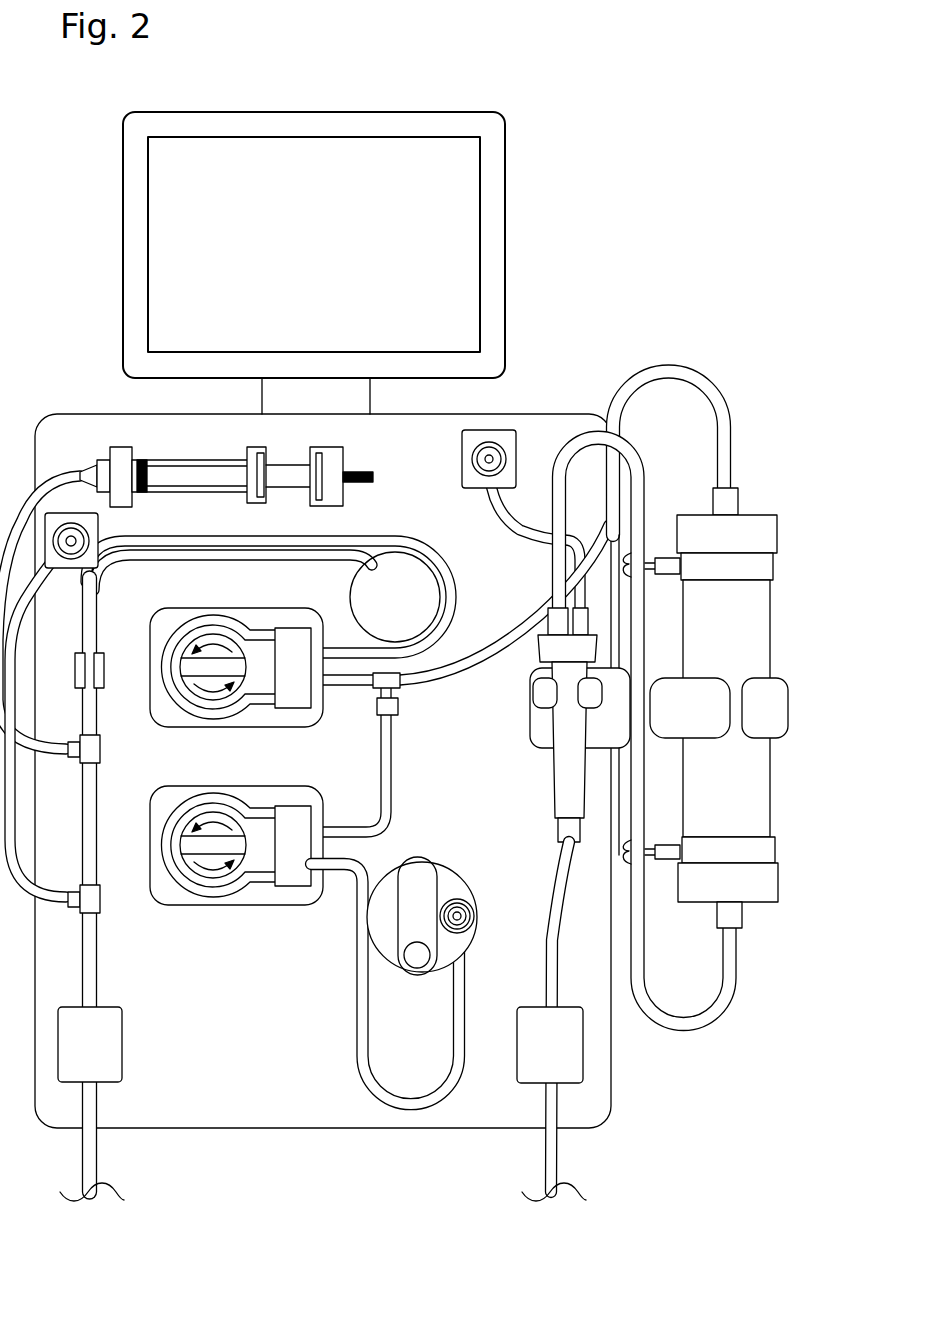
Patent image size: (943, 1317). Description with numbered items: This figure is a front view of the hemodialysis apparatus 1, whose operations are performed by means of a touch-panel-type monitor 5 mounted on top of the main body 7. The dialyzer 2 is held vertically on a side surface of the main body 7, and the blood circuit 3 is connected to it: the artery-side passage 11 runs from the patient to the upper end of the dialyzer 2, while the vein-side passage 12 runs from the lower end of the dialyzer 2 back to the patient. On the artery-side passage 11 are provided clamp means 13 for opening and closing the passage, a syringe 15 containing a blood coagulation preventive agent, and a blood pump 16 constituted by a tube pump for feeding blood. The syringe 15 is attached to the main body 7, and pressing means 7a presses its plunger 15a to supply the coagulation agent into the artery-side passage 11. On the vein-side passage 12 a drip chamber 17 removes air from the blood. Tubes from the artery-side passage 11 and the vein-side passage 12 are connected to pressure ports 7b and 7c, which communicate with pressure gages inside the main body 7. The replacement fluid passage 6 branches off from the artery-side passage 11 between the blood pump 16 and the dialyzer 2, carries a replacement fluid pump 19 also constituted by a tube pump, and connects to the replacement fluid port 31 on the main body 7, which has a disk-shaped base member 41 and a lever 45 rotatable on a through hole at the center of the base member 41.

The hemodialysis apparatus 1 is at (590, 173).
The dialyzer 2 is at (776, 513).
The blood circuit 3 is at (652, 367).
The touch-panel-type monitor 5 is at (506, 236).
The replacement fluid passage 6 is at (392, 774).
The main body 7 is at (542, 412).
The pressing means 7a is at (343, 457).
The pressure port 7b is at (97, 534).
The pressure port 7c is at (470, 462).
The artery-side passage 11 is at (468, 668).
The vein-side passage 12 is at (555, 900).
The clamp means 13 is at (107, 1042).
The syringe 15 is at (188, 462).
The plunger 15a is at (285, 462).
The blood pump 16 is at (185, 670).
The drip chamber 17 is at (548, 757).
The replacement fluid pump 19 is at (183, 848).
The replacement fluid port 31 is at (447, 890).
The base member 41 is at (466, 930).
The lever 45 is at (417, 870).